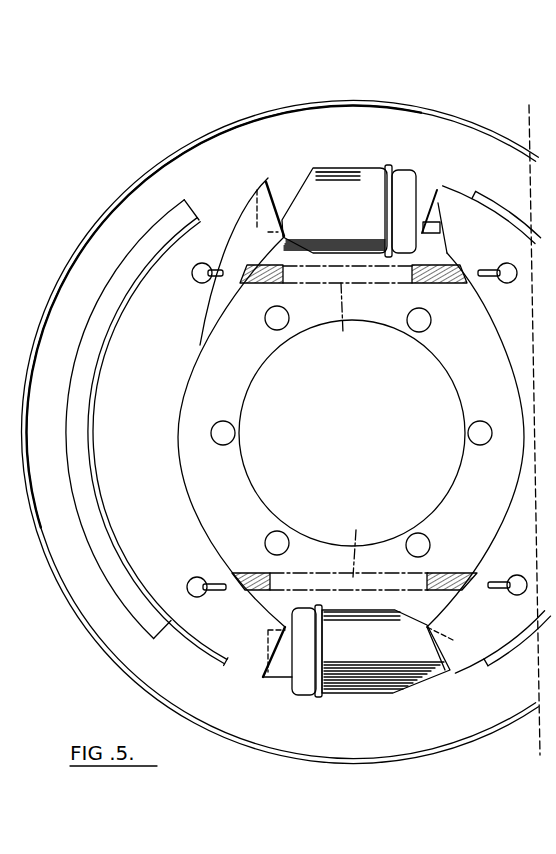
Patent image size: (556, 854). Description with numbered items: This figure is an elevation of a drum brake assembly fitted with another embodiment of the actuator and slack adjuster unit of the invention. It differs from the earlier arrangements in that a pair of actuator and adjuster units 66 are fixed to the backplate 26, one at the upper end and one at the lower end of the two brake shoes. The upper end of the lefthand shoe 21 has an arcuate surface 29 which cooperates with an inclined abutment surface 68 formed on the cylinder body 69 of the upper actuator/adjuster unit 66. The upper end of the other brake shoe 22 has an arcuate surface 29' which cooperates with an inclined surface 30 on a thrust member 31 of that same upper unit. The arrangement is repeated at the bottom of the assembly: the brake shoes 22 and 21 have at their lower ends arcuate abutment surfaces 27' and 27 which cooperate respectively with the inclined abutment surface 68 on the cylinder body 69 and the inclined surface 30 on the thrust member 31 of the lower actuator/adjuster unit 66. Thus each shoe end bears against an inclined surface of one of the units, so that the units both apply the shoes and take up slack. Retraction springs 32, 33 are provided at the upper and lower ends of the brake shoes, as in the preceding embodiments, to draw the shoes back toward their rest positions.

The lefthand shoe 21 is at (180, 416).
The brake shoe 22 is at (480, 388).
The backplate 26 is at (266, 137).
The arcuate abutment surface 27 is at (271, 682).
The arcuate abutment surface 27' is at (489, 669).
The arcuate surface 29 is at (187, 404).
The arcuate surface 29' is at (489, 203).
The inclined surface 30 is at (450, 250).
The thrust member 31 is at (427, 185).
The retraction spring 32 is at (355, 512).
The retraction spring 33 is at (347, 313).
The actuator and adjuster unit 66 is at (374, 157).
The inclined abutment surface 68 is at (252, 206).
The cylinder body 69 is at (362, 188).